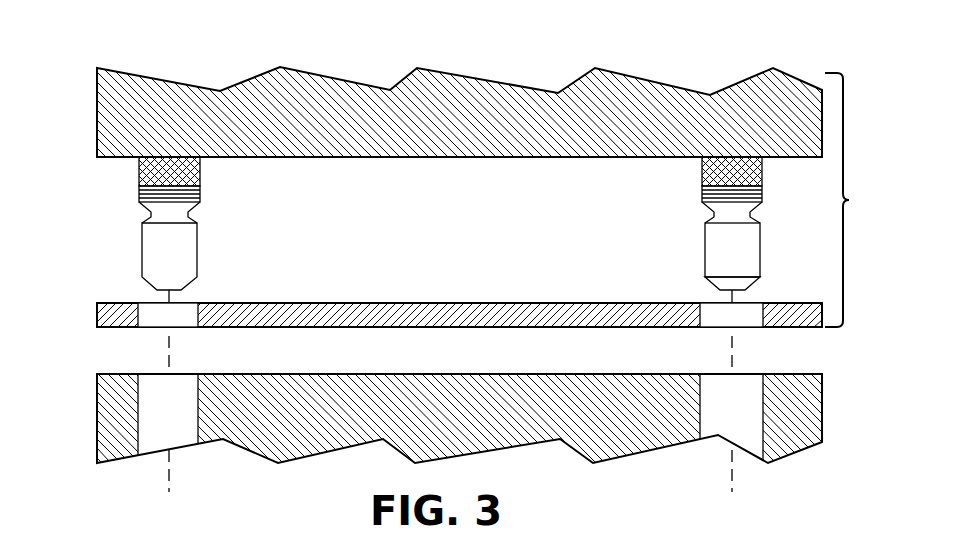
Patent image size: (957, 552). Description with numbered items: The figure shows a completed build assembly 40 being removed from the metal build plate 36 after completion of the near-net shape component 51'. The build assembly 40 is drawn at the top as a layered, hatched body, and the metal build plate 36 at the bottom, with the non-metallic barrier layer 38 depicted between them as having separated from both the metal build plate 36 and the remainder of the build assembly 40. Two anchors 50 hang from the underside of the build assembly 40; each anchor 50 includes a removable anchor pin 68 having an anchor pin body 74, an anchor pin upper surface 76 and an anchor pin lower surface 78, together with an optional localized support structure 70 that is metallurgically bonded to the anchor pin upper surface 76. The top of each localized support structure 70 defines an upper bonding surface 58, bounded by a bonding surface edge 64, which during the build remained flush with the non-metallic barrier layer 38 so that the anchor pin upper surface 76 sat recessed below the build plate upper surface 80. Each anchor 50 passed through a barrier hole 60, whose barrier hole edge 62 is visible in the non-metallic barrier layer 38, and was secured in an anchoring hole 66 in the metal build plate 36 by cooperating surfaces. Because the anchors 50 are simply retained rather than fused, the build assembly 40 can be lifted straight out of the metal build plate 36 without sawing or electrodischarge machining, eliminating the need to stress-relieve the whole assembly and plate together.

The metal build plate 36 is at (446, 432).
The non-metallic barrier layer 38 is at (444, 287).
The build assembly 40 is at (851, 200).
The anchor 50 is at (219, 324).
The completed near-net shape component 51' is at (459, 86).
The upper bonding surface 58 is at (174, 140).
The barrier hole 60 is at (190, 313).
The barrier hole edge 62 is at (142, 313).
The bonding surface edge 64 is at (201, 324).
The anchoring hole 66 is at (156, 438).
The anchor pin 68 is at (178, 260).
The localized support structure 70 is at (212, 192).
The anchor pin body 74 is at (707, 324).
The anchor pin upper surface 76 is at (722, 204).
The anchor pin lower surface 78 is at (725, 281).
The build plate upper surface 80 is at (399, 374).